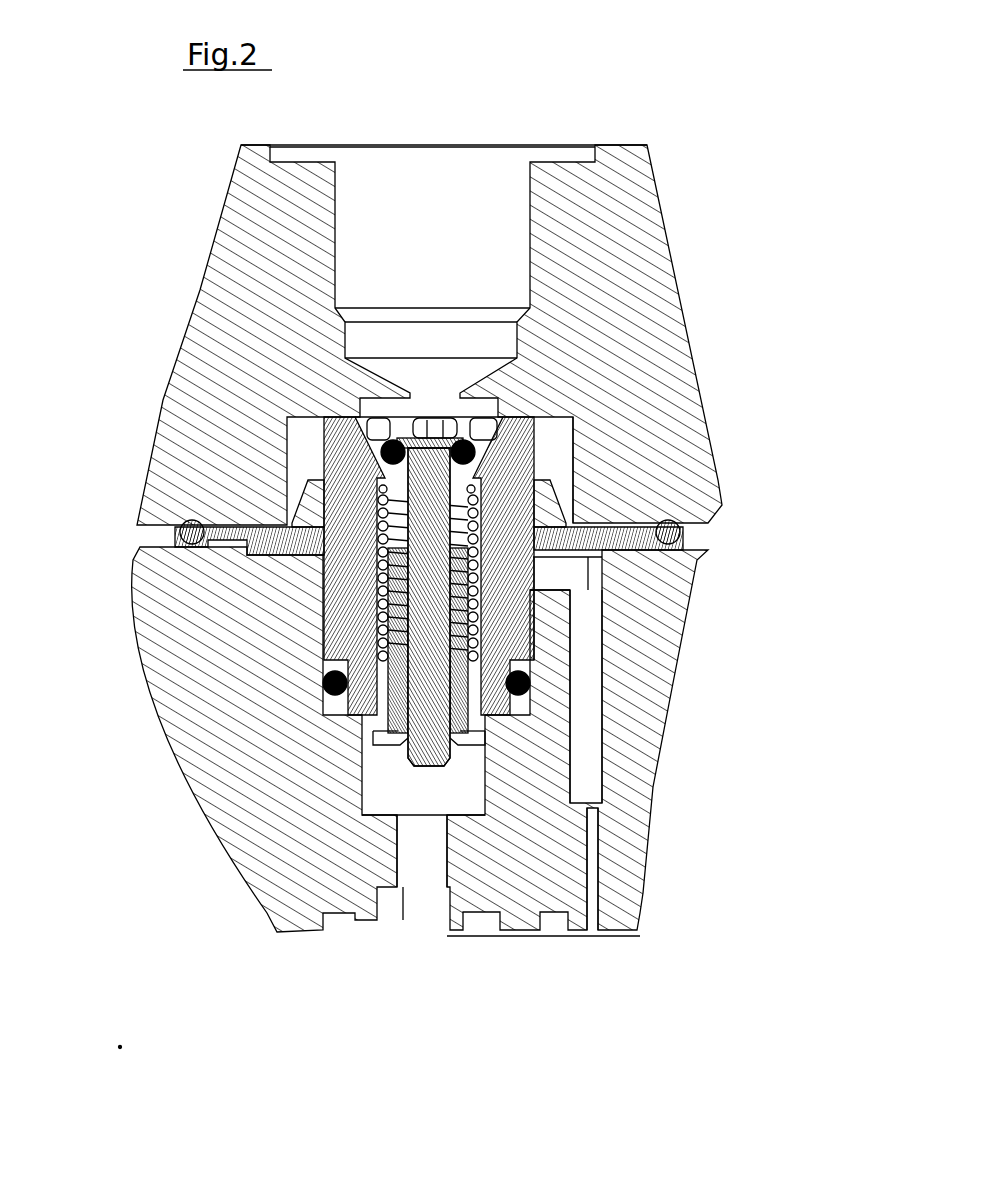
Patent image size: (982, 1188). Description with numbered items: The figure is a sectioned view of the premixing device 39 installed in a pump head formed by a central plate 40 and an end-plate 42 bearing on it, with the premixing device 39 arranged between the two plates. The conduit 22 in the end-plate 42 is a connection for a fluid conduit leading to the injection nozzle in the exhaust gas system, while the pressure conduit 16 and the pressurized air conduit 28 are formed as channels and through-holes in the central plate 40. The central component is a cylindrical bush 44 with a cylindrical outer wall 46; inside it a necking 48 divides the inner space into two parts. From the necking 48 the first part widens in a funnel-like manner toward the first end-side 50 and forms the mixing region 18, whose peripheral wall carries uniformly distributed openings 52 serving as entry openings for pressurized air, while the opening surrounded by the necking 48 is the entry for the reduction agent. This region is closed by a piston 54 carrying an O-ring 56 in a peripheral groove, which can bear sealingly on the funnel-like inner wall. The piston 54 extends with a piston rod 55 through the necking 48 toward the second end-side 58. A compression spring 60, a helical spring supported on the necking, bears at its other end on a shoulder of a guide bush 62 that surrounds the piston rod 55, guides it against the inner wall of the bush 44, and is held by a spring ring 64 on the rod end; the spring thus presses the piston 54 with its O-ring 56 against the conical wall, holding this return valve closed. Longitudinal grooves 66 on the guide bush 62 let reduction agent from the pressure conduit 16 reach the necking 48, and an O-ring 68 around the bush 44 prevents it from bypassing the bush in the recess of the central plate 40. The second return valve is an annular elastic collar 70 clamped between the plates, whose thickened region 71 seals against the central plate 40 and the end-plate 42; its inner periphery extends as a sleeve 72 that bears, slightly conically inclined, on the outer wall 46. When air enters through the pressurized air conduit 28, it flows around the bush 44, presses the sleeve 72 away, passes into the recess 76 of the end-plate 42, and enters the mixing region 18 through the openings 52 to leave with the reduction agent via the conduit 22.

The pressure conduit 16 is at (425, 832).
The mixing region 18 is at (537, 417).
The conduit 22 is at (488, 203).
The pressurized air conduit 28 is at (590, 768).
The premixing device 39 is at (565, 505).
The central plate 40 is at (640, 710).
The end-plate 42 is at (657, 357).
The cylindrical bush 44 is at (535, 603).
The cylindrical outer wall 46 is at (537, 568).
The necking 48 is at (470, 488).
The first end-side 50 is at (490, 428).
The openings 52 is at (402, 430).
The piston 54 is at (385, 445).
The piston rod 55 is at (383, 668).
The O-ring 56 is at (326, 456).
The second end-side 58 is at (530, 745).
The compression spring 60 is at (425, 635).
The guide bush 62 is at (350, 716).
The spring ring 64 is at (375, 742).
The longitudinal grooves 66 is at (345, 712).
The O-ring 68 is at (573, 717).
The annular elastic collar 70 is at (685, 545).
The thickened region 71 is at (137, 523).
The sleeve 72 is at (555, 470).
The recess 76 is at (575, 427).